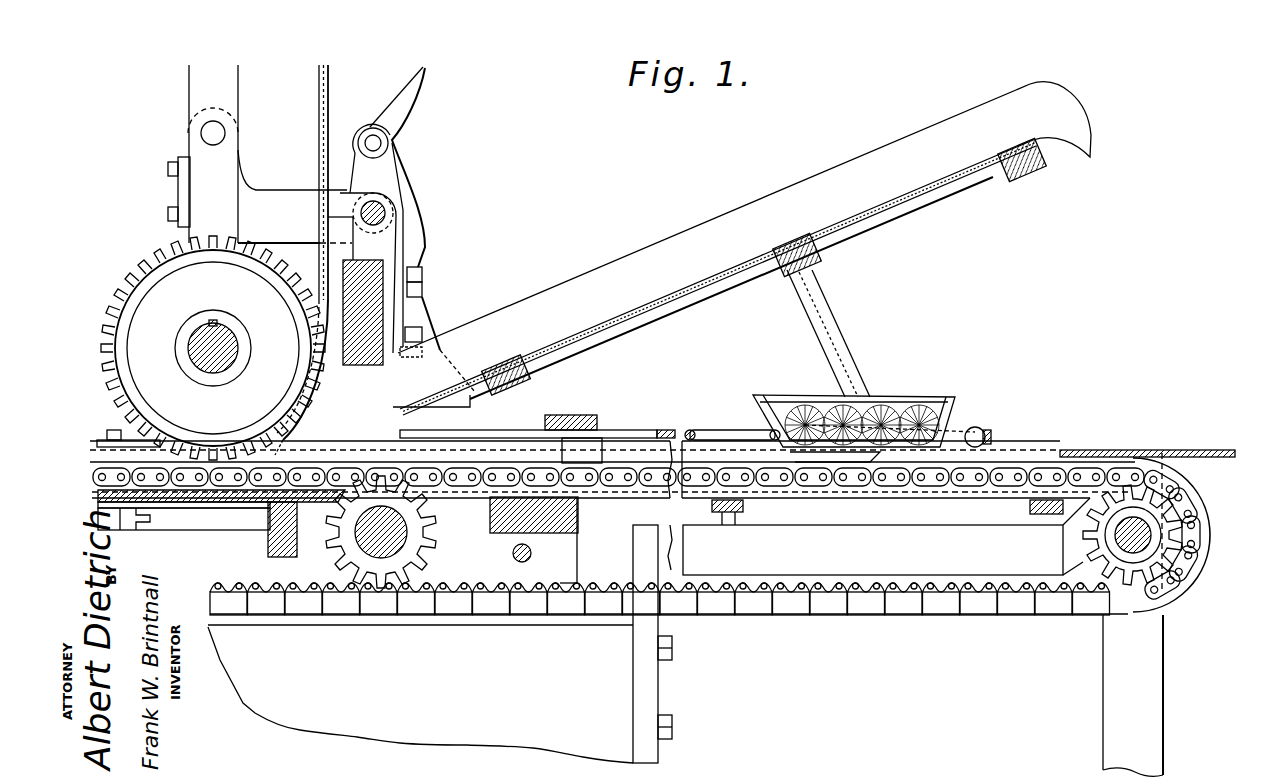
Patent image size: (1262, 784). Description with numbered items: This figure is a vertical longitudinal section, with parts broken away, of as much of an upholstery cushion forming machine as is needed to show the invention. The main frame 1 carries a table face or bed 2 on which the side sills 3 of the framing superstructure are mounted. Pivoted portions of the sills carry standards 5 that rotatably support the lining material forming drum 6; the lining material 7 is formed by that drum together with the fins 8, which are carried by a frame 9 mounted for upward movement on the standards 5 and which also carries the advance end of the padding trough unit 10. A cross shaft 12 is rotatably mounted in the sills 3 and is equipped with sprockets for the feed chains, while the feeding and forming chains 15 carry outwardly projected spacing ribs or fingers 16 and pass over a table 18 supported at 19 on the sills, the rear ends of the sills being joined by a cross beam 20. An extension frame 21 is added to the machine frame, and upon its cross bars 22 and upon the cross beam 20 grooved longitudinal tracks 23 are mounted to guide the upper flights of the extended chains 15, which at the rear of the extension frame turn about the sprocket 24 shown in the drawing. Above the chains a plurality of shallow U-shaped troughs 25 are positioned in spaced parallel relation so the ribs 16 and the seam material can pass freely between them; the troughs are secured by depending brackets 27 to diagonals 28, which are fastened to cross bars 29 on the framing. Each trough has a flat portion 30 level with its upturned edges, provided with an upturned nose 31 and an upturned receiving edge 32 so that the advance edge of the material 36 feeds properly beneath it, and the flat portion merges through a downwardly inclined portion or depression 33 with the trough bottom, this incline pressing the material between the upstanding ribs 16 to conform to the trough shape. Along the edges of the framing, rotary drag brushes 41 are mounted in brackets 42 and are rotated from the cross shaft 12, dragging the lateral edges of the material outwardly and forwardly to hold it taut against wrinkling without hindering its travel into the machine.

The main frame 1 is at (634, 712).
The table face or bed 2 is at (503, 633).
The side sills 3 is at (572, 562).
The standards 5 is at (238, 148).
The lining material forming drum 6 is at (180, 283).
The lining material 7 is at (328, 118).
The fins 8 is at (290, 428).
The frame 9 is at (298, 186).
The padding trough unit 10 is at (638, 248).
The cross shaft 12 is at (410, 538).
The feeding and forming chains 15 is at (325, 602).
The spacing ribs or fingers 16 is at (266, 602).
The table 18 is at (210, 497).
The table support 19 is at (270, 545).
The cross beam 20 is at (578, 522).
The extension frame 21 is at (660, 675).
The cross bars 22 is at (738, 515).
The grooved longitudinal tracks 23 is at (862, 498).
The sprocket 24 is at (1158, 528).
The shallow U-shaped troughs 25 is at (376, 425).
The depending brackets 27 is at (606, 448).
The diagonals 28 is at (472, 436).
The cross bars 29 is at (565, 415).
The flat portion 30 is at (905, 438).
The upturned nose 31 is at (982, 430).
The upturned receiving edge 32 is at (960, 430).
The downwardly inclined portion or depression 33 is at (823, 444).
The material 36 is at (366, 456).
The rotary drag brushes 41 is at (870, 404).
The brackets 42 is at (850, 400).